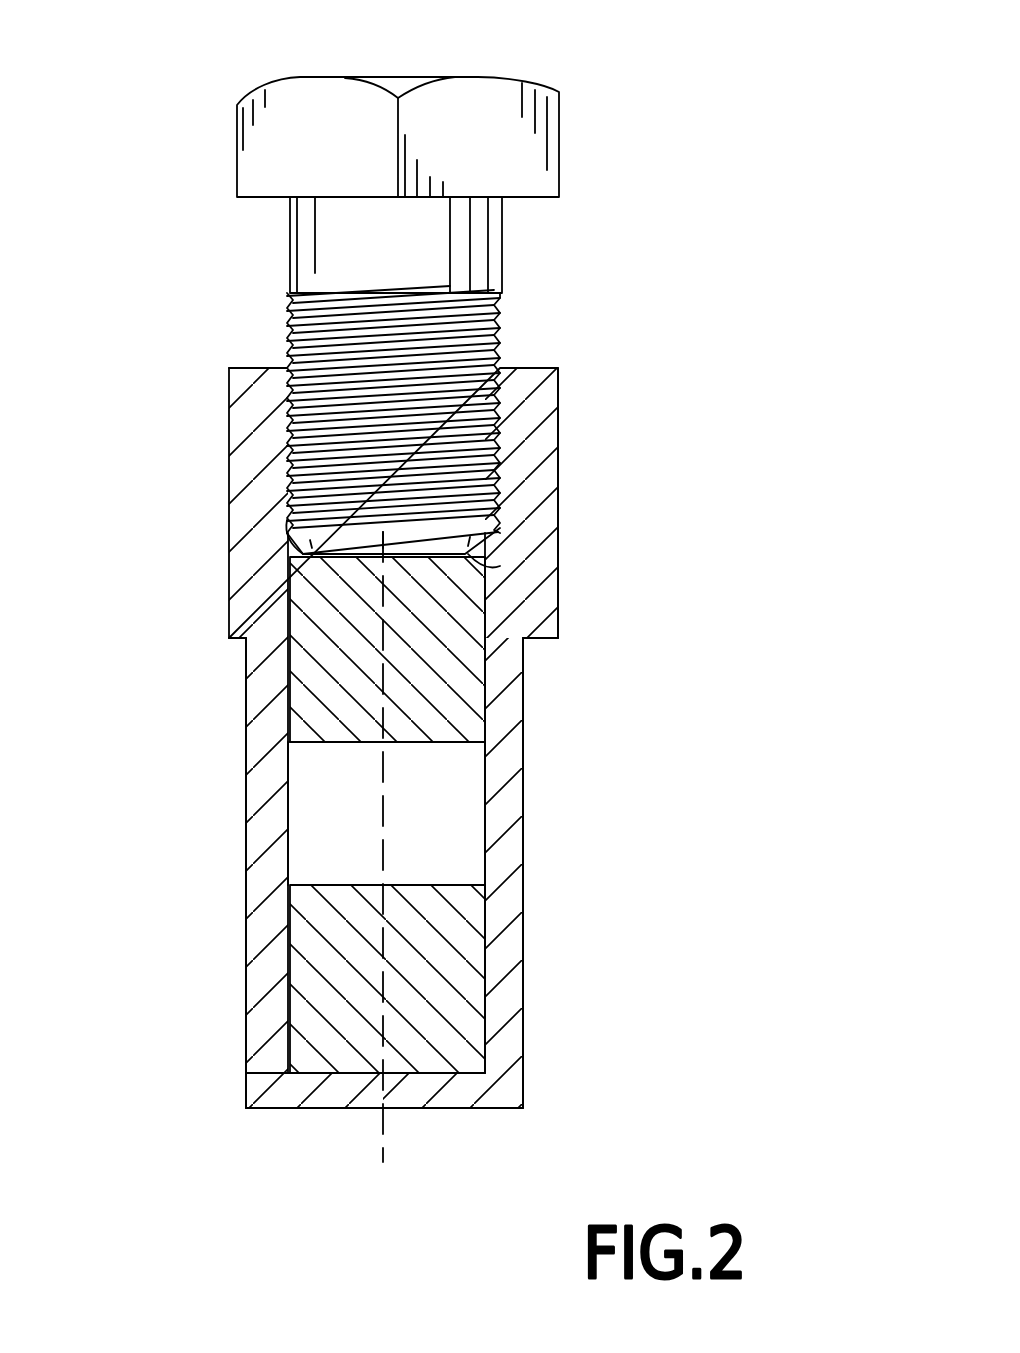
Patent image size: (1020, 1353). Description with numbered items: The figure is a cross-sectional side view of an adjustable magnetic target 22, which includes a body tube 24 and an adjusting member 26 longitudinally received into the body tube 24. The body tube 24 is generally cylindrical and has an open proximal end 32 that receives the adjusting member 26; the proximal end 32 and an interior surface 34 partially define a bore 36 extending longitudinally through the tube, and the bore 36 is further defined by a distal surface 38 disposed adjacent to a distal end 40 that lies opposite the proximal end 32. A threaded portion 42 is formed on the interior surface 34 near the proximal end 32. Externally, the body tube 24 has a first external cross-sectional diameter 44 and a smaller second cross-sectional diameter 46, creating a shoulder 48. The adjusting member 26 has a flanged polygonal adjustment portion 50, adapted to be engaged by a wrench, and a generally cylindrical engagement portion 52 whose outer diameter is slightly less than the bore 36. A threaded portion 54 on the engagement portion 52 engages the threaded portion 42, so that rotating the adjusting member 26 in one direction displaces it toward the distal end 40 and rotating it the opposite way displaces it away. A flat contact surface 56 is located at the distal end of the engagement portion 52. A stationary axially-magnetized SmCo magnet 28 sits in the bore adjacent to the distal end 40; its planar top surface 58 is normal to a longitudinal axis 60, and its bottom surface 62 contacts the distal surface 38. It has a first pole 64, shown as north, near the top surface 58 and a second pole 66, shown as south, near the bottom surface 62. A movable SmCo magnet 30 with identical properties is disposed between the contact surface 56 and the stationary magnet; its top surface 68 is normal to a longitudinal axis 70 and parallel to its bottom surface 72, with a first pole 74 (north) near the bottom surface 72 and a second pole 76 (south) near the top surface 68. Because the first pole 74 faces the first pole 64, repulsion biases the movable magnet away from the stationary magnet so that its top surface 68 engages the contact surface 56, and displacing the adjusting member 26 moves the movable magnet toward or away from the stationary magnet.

The adjustable magnetic target 22 is at (448, 595).
The body tube 24 is at (396, 776).
The adjusting member 26 is at (439, 322).
The stationary SmCo magnet 28 is at (537, 1024).
The movable SmCo magnet 30 is at (514, 671).
The proximal end 32 is at (290, 368).
The interior surface 34 is at (287, 817).
The bore 36 is at (423, 820).
The distal surface 38 is at (443, 1068).
The distal end 40 is at (245, 1037).
The threaded portion 42 is at (558, 408).
The first external cross-sectional diameter 44 is at (215, 458).
The second cross-sectional diameter 46 is at (232, 932).
The shoulder 48 is at (230, 648).
The adjustment portion 50 is at (560, 145).
The engagement portion 52 is at (505, 272).
The threaded portion 54 is at (375, 395).
The contact surface 56 is at (480, 560).
The top surface 58 is at (322, 873).
The longitudinal axis 60 is at (383, 977).
The bottom surface 62 is at (290, 1108).
The first pole 64 is at (400, 910).
The second pole 66 is at (395, 1062).
The top surface 68 is at (292, 518).
The longitudinal axis 70 is at (393, 650).
The bottom surface 72 is at (420, 742).
The first pole 74 is at (397, 720).
The second pole 76 is at (400, 580).